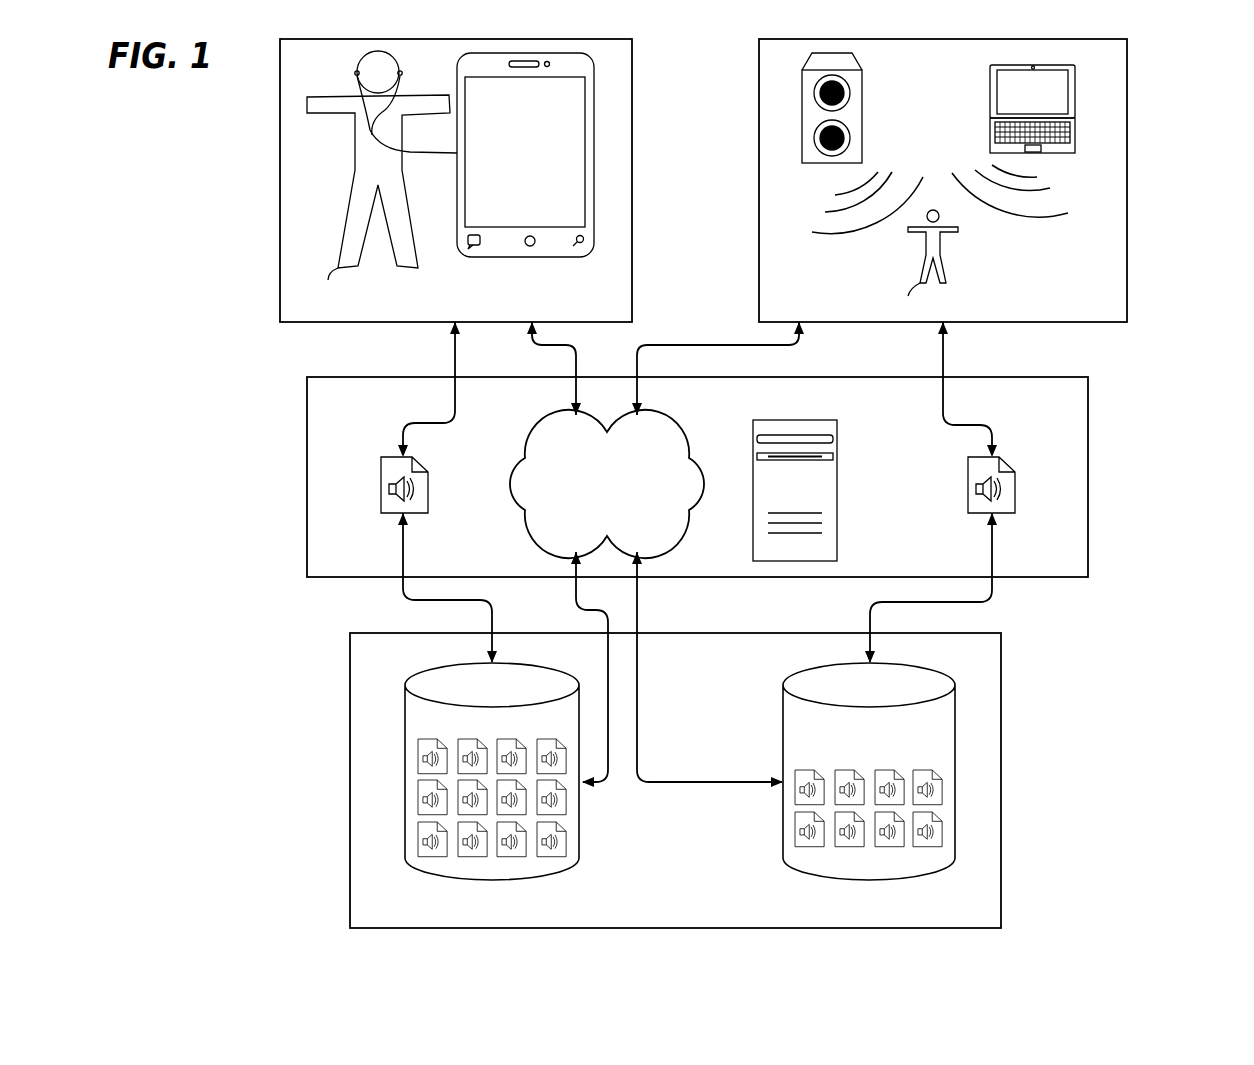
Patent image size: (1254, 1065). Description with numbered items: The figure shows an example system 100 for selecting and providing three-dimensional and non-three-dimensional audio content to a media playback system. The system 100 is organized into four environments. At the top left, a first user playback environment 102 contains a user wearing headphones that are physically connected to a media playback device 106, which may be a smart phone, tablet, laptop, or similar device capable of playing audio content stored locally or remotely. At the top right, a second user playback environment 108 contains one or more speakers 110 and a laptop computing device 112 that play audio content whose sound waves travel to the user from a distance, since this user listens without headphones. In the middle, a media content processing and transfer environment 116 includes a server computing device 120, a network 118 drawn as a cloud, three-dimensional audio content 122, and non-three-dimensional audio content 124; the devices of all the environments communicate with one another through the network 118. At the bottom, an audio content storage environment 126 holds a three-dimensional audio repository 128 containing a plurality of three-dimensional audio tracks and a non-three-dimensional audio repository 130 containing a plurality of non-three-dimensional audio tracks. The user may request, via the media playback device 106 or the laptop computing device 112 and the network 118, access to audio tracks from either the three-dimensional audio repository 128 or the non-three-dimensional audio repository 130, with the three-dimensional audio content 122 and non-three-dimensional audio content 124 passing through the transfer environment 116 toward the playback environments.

The system 100 is at (1158, 772).
The first user playback environment 102 is at (479, 165).
The media playback device 106 is at (530, 257).
The second user playback environment 108 is at (966, 165).
The one or more speakers 110 is at (862, 106).
The laptop computing device 112 is at (1075, 106).
The media content processing and transfer environment 116 is at (721, 462).
The network 118 is at (607, 484).
The server computing device 120 is at (837, 420).
The 3D audio content 122 is at (413, 461).
The non-3D audio content 124 is at (1000, 461).
The audio content storage environment 126 is at (699, 765).
The 3D audio repository 128 is at (490, 879).
The non-3D audio repository 130 is at (870, 879).